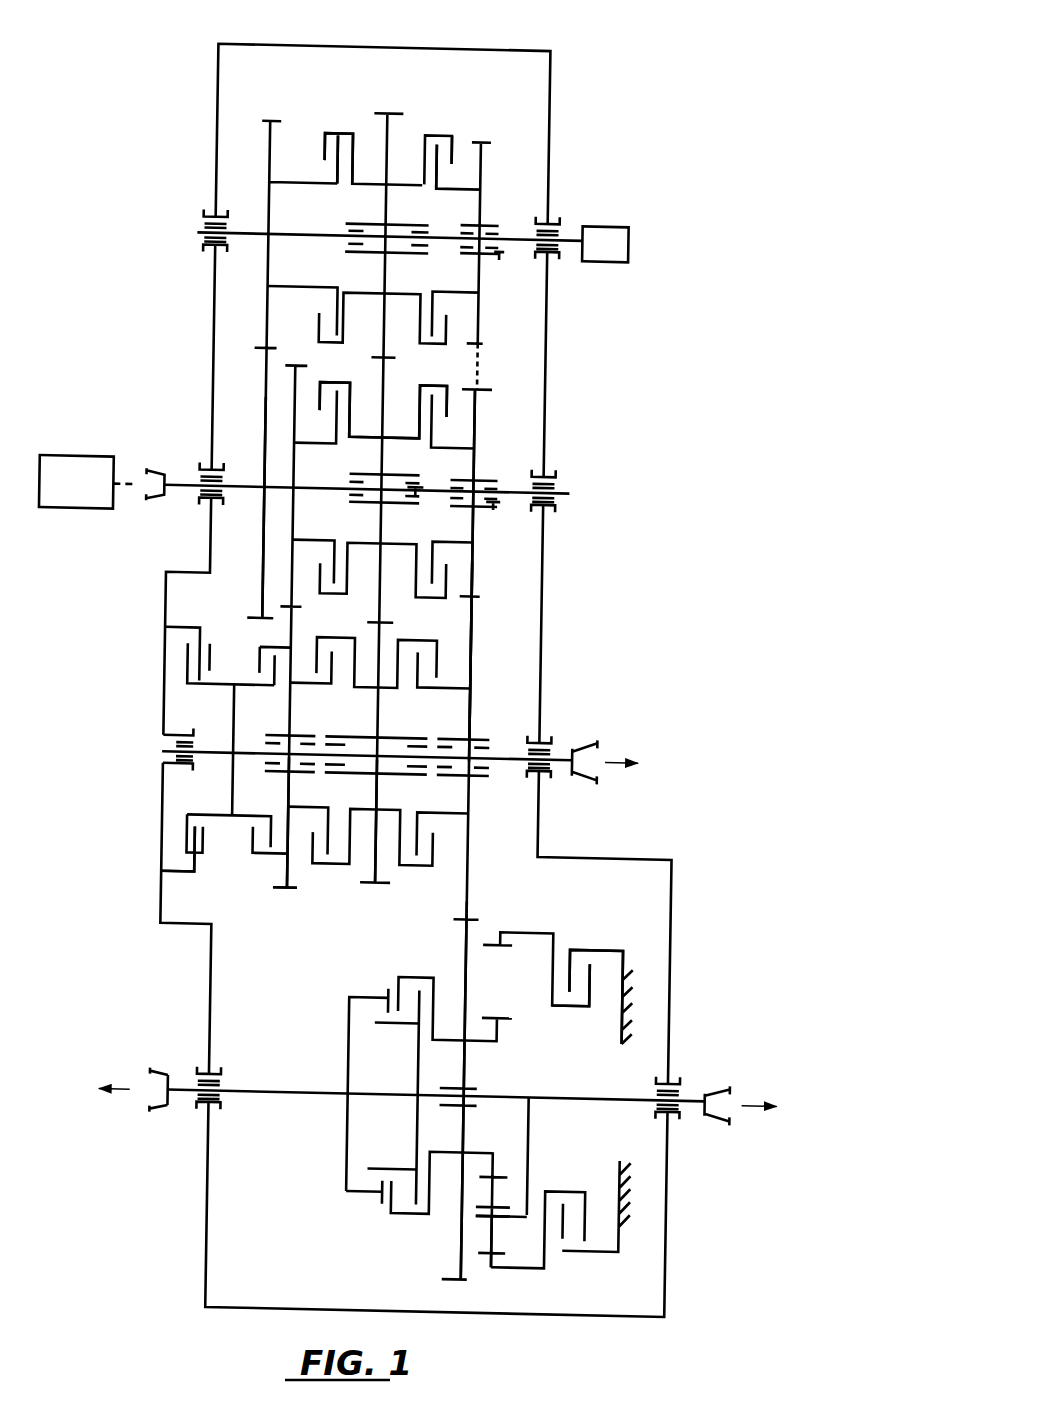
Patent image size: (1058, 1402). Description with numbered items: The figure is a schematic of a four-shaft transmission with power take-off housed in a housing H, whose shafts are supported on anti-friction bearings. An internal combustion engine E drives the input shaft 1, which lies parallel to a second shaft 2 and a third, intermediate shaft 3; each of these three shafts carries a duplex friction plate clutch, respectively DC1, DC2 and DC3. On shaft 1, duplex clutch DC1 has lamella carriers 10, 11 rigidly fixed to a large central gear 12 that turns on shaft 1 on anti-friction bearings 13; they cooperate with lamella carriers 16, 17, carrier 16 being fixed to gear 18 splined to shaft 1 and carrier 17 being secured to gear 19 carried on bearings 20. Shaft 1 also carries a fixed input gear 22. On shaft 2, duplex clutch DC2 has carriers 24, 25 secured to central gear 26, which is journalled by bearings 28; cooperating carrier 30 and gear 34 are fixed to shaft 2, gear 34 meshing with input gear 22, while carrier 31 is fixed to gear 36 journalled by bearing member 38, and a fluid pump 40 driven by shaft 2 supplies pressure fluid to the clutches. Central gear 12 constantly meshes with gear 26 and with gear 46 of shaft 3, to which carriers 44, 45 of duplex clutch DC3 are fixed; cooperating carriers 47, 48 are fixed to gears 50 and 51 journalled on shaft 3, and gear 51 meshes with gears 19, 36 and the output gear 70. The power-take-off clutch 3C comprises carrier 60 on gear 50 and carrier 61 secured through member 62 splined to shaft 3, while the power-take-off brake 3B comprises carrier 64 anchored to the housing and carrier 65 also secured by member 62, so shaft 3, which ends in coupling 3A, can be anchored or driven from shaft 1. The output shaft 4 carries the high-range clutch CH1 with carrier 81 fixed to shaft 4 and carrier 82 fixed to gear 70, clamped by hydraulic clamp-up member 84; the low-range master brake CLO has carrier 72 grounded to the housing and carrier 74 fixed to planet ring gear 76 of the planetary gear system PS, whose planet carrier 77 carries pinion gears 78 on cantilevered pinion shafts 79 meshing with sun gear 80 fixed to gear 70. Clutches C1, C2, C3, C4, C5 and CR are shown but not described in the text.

The housing H is at (544, 86).
The internal combustion engine E is at (72, 462).
The input shaft 1 is at (511, 501).
The second shaft 2 is at (566, 236).
The third shaft 3 is at (551, 756).
The coupling 3A is at (596, 738).
The power-take-off brake 3B is at (186, 669).
The power-take-off clutch 3C is at (258, 661).
The output shaft 4 is at (704, 1092).
The lamella carrier 10 is at (345, 418).
The lamella carrier 11 is at (414, 408).
The large central gear 12 is at (383, 362).
The anti-friction bearings 13 is at (410, 487).
The lamella carrier 16 is at (331, 425).
The lamella carrier 17 is at (431, 434).
The gear 18 is at (280, 376).
The gear 19 is at (472, 460).
The anti-friction bearings 20 is at (489, 503).
The input gear 22 is at (259, 556).
The lamella carrier 24 is at (345, 134).
The lamella carrier 25 is at (440, 148).
The central gear 26 is at (380, 124).
The anti-friction bearings 28 is at (414, 231).
The lamella carrier 30 is at (328, 172).
The lamella carrier 31 is at (429, 179).
The gear 34 is at (259, 149).
The gear 36 is at (475, 172).
The anti-friction bearing member 38 is at (492, 254).
The fluid pump 40 is at (613, 222).
The lamella carrier 44 is at (333, 638).
The lamella carrier 45 is at (430, 641).
The gear 46 is at (376, 881).
The lamella carrier 47 is at (332, 678).
The lamella carrier 48 is at (415, 677).
The gear 50 is at (282, 893).
The gear 51 is at (473, 627).
The lamella carrier 60 is at (271, 856).
The lamella carrier 61 is at (257, 818).
The member 62 is at (233, 712).
The lamella carrier 64 is at (198, 870).
The lamella carrier 65 is at (195, 818).
The output gear 70 is at (471, 995).
The lamella carrier 72 is at (580, 960).
The lamella carrier 74 is at (584, 1003).
The planet ring gear 76 is at (501, 940).
The planet carrier 77 is at (537, 1140).
The pinion gears 78 is at (504, 1236).
The cantilevered pinion shafts 79 is at (532, 1208).
The planetary sun gear 80 is at (503, 1034).
The lamella carrier 81 is at (423, 990).
The lamella carrier 82 is at (439, 977).
The clutch clamp-up member 84 is at (388, 991).
The clutch C1 is at (344, 864).
The clutch C2 is at (327, 592).
The clutch C3 is at (324, 139).
The clutch C4 is at (433, 596).
The clutch C5 is at (430, 860).
The reverse clutch CR is at (444, 136).
The high-range clutch CH1 is at (388, 1207).
The low-range brake CLO is at (596, 977).
The duplex friction plate clutch DC1 is at (455, 382).
The duplex friction plate clutch DC2 is at (455, 79).
The duplex friction plate clutch DC3 is at (482, 692).
The planetary gear system PS is at (501, 1274).